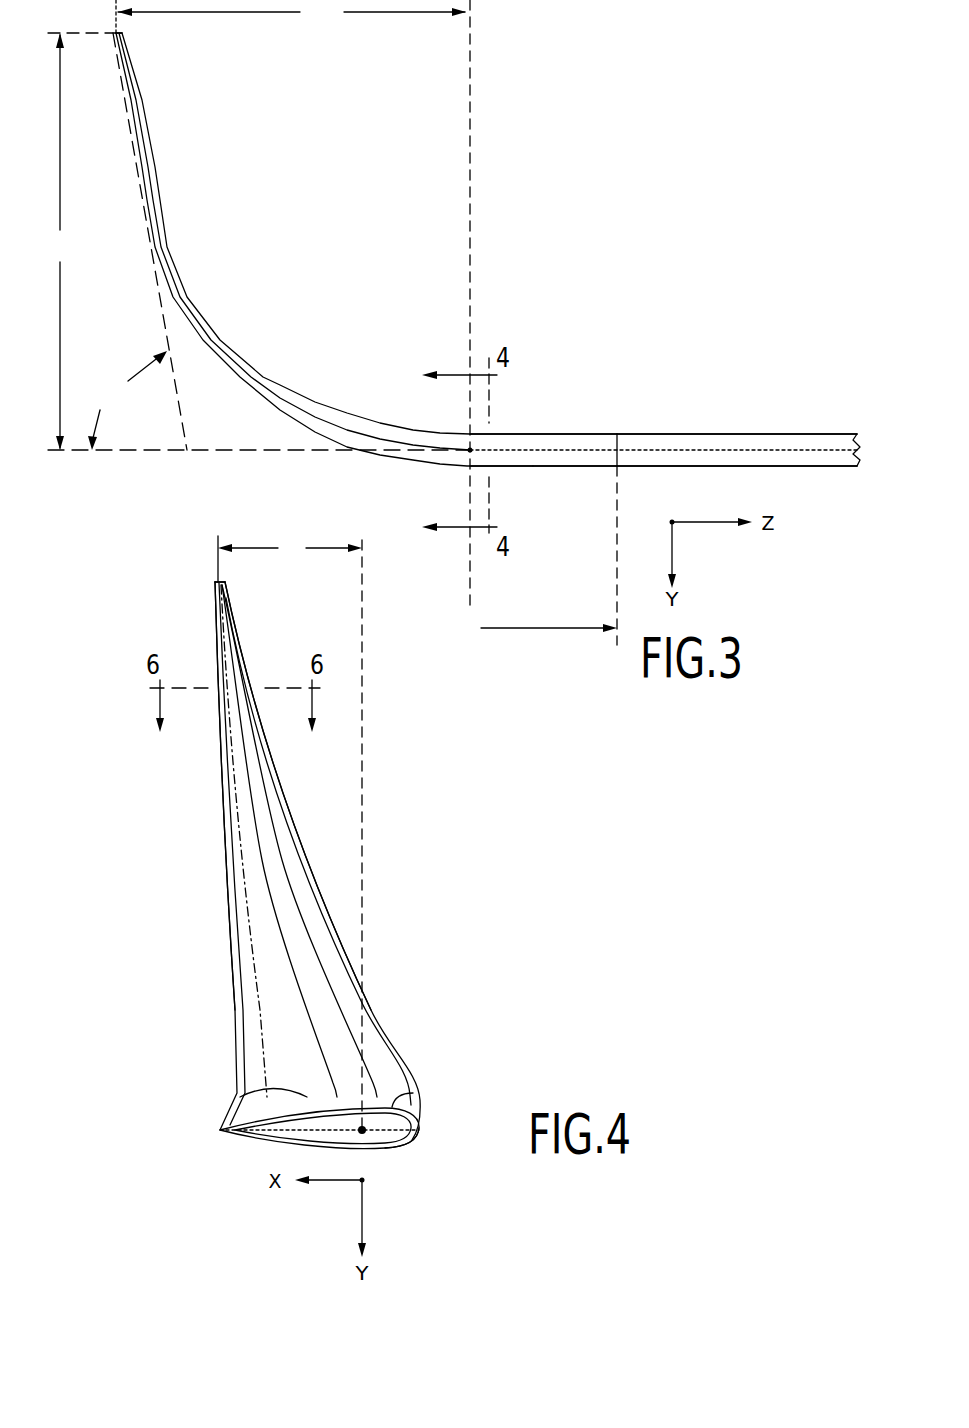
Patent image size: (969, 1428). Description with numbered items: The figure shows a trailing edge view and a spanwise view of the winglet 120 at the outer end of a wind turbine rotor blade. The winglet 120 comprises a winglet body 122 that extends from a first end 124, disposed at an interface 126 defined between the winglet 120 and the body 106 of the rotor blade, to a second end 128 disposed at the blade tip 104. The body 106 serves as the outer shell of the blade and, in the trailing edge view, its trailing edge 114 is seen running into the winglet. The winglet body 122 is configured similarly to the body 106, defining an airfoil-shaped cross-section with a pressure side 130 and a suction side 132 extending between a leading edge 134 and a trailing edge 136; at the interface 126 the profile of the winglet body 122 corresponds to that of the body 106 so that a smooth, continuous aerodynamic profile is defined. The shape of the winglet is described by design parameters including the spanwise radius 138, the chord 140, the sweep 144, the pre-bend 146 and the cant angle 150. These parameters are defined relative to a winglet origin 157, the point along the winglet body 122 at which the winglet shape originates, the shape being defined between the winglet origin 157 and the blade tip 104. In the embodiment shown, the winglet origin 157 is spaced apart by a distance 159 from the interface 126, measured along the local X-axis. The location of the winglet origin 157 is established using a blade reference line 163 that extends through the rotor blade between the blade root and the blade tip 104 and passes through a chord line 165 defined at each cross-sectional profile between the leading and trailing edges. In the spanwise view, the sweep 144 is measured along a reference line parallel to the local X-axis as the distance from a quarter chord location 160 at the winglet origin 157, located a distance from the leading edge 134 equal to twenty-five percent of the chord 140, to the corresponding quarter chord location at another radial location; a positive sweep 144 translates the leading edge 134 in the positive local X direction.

In FIG. 3, the winglet 120 is at (693, 103).
In FIG. 4, the winglet 120 is at (458, 812).
In FIG. 3, the winglet body 122 is at (296, 394).
In FIG. 4, the winglet body 122 is at (258, 957).
In FIG. 3, the blade tip 104 is at (201, 57).
In FIG. 4, the blade tip 104 is at (142, 568).
In FIG. 3, the second end 128 is at (128, 34).
In FIG. 4, the second end 128 is at (214, 581).
In FIG. 3, the first end 124 is at (706, 496).
In FIG. 3, the interface 126 is at (617, 446).
In FIG. 3, the body 106 is at (830, 434).
In FIG. 3, the trailing edge 114 is at (838, 466).
In FIG. 3, the pressure side 130 is at (557, 434).
In FIG. 4, the pressure side 130 is at (240, 1097).
In FIG. 3, the suction side 132 is at (563, 466).
In FIG. 4, the suction side 132 is at (340, 1149).
In FIG. 4, the leading edge 134 is at (294, 808).
In FIG. 3, the trailing edge 136 is at (533, 466).
In FIG. 4, the trailing edge 136 is at (223, 846).
In FIG. 3, the spanwise radius 138 is at (292, 14).
In FIG. 4, the sweep 144 is at (290, 831).
In FIG. 3, the pre-bend 146 is at (60, 241).
In FIG. 3, the cant angle 150 is at (127, 400).
In FIG. 3, the winglet origin 157 is at (470, 450).
In FIG. 4, the winglet origin 157 is at (413, 1093).
In FIG. 3, the distance 159 is at (538, 630).
In FIG. 4, the quarter chord location 160 is at (420, 1147).
In FIG. 4, the blade reference line 163 is at (214, 543).
In FIG. 4, the chord 140 is at (305, 1167).
In FIG. 4, the chord line 165 is at (293, 1140).